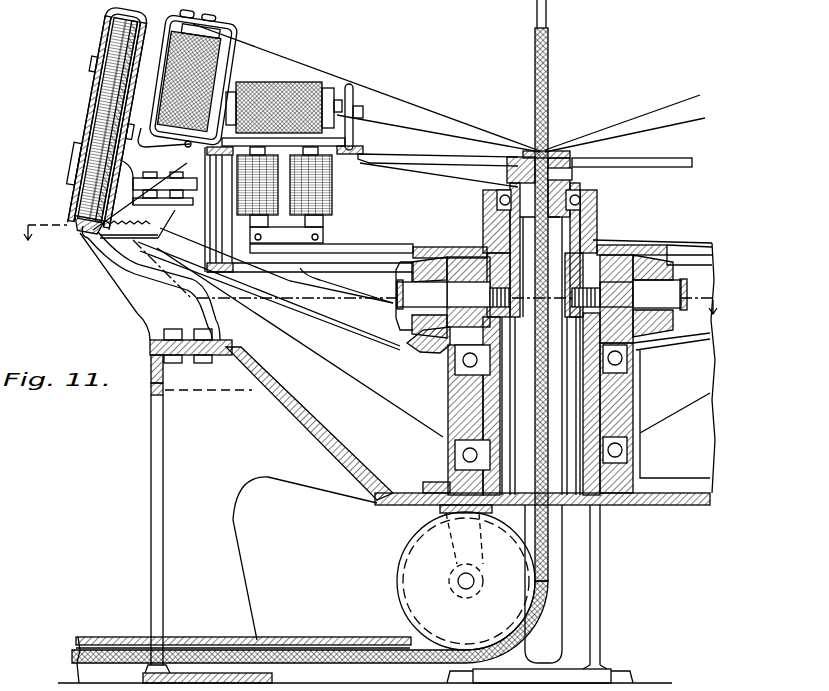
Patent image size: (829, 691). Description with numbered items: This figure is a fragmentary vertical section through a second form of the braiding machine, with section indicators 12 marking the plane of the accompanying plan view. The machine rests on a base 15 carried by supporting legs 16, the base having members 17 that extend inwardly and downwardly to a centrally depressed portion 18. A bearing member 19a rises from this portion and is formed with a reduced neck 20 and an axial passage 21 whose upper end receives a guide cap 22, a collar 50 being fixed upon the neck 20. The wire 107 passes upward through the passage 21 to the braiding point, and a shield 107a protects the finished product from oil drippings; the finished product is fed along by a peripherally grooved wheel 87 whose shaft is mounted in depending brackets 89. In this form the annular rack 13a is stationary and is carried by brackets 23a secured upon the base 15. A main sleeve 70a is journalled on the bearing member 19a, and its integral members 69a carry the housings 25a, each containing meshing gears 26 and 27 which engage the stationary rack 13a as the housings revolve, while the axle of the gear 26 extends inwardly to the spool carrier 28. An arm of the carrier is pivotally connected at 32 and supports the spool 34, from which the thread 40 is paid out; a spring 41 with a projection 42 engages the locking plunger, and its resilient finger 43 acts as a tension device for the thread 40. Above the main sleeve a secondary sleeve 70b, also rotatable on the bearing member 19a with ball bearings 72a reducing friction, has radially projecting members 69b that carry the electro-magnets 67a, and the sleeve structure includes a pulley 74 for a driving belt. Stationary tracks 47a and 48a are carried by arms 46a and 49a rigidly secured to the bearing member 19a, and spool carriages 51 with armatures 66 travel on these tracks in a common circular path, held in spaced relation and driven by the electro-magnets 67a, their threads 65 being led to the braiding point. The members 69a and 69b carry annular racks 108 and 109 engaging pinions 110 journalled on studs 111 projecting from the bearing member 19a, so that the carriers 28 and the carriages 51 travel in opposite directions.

The section line 12- 12 is at (367, 279).
The annular rack 13a is at (96, 236).
The base 15 is at (150, 362).
The supporting legs 16 is at (157, 538).
The members 17 is at (303, 432).
The centrally depressed portion 18 is at (402, 503).
The bearing member 19a is at (604, 445).
The reduced neck 20 is at (522, 172).
The axial passage 21 is at (551, 404).
The guide cap 22 is at (552, 143).
The brackets 23a is at (140, 300).
The housings 25a is at (93, 100).
The gear 26 is at (114, 44).
The gear 27 is at (88, 170).
The spool or thread carrier 28 is at (108, 110).
The pivotal connection 32 is at (188, 147).
The spool 34 is at (200, 36).
The thread 40 is at (268, 50).
The spring 41 is at (176, 10).
The projection 42 is at (193, 14).
The resilient finger 43 is at (203, 30).
The arms 46a is at (284, 272).
The track 47a is at (207, 160).
The track 48a is at (358, 148).
The arms 49a is at (438, 163).
The collar 50 is at (579, 157).
The spool or thread carriages 51 is at (240, 140).
The thread 65 is at (413, 123).
The armature 66 is at (293, 147).
The electro-magnets 67a is at (307, 203).
The members 69a is at (313, 318).
The members 69b is at (362, 250).
The main sleeve 70a is at (440, 407).
The secondary sleeve 70b is at (487, 218).
The ball bearings 72a is at (494, 199).
The pulley 74 is at (450, 452).
The peripherally grooved wheel 87 is at (410, 588).
The brackets 89 is at (460, 550).
The wire 107 is at (548, 20).
The shield 107a is at (220, 622).
The annular rack 108 is at (428, 340).
The annular rack 109 is at (426, 262).
The pinions 110 is at (407, 333).
The studs 111 is at (542, 294).